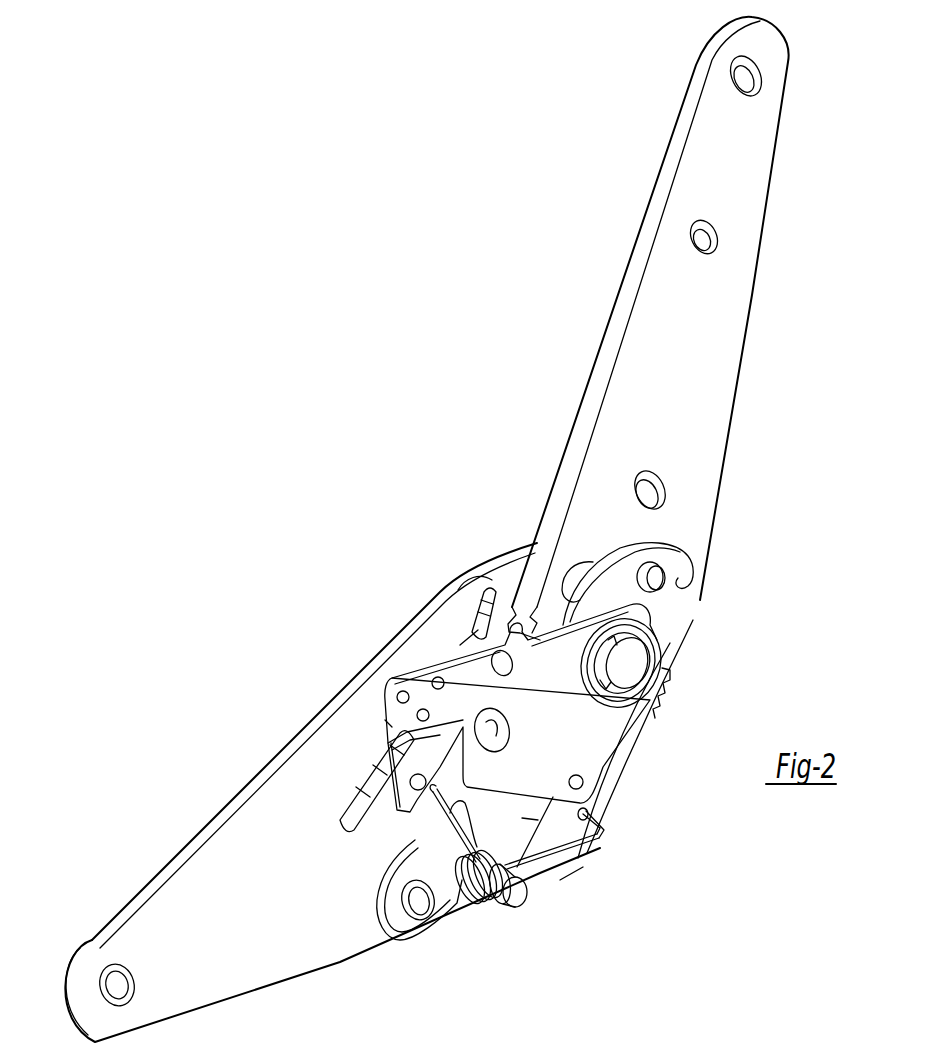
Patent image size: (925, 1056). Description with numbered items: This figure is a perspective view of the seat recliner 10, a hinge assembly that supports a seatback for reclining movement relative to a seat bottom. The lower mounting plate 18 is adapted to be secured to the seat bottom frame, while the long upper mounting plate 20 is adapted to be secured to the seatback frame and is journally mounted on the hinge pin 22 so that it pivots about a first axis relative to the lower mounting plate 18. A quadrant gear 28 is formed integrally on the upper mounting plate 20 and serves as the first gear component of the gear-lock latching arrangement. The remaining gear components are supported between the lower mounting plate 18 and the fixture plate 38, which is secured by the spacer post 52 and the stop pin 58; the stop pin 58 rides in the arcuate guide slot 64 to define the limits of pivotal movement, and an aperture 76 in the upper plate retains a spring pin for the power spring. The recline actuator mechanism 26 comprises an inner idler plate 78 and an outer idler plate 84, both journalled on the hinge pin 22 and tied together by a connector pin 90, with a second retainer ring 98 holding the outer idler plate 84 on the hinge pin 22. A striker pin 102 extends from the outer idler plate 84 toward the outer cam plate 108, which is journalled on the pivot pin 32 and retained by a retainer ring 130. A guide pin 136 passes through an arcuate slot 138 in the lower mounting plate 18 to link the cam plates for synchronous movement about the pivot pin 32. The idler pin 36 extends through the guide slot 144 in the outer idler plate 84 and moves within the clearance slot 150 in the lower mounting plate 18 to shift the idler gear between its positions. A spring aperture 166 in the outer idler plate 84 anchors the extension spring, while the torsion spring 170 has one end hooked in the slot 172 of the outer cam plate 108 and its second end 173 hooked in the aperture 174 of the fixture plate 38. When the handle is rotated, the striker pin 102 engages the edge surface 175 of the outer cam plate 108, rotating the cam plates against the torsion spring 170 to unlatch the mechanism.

The seat recliner 10 is at (474, 334).
The lower mounting plate 18 is at (185, 895).
The upper mounting plate 20 is at (702, 333).
The hinge pin 22 is at (642, 672).
The recline actuator mechanism 26 is at (390, 822).
The quadrant gear 28 is at (658, 708).
The pivot pin 32 is at (513, 895).
The idler pin 36 is at (505, 712).
The fixture plate 38 is at (680, 643).
The spacer post 52 is at (418, 905).
The stop pin 58 is at (663, 578).
The arcuate guide slot 64 is at (605, 567).
The aperture 76 is at (653, 470).
The inner idler plate 78 is at (478, 625).
The outer idler plate 84 is at (610, 727).
The connector pin 90 is at (460, 645).
The second retainer ring 98 is at (642, 658).
The striker pin 102 is at (583, 788).
The outer cam plate 108 is at (590, 852).
The retainer ring 130 is at (466, 900).
The guide pin 136 is at (376, 760).
The arcuate slot 138 is at (350, 824).
The guide slot 144 is at (497, 750).
The clearance slot 150 is at (483, 637).
The spring aperture 166 is at (385, 720).
The torsion spring 170 is at (583, 863).
The slot 172 is at (435, 800).
The second end 173 is at (607, 840).
The aperture 174 is at (602, 832).
The edge surface 175 is at (583, 866).